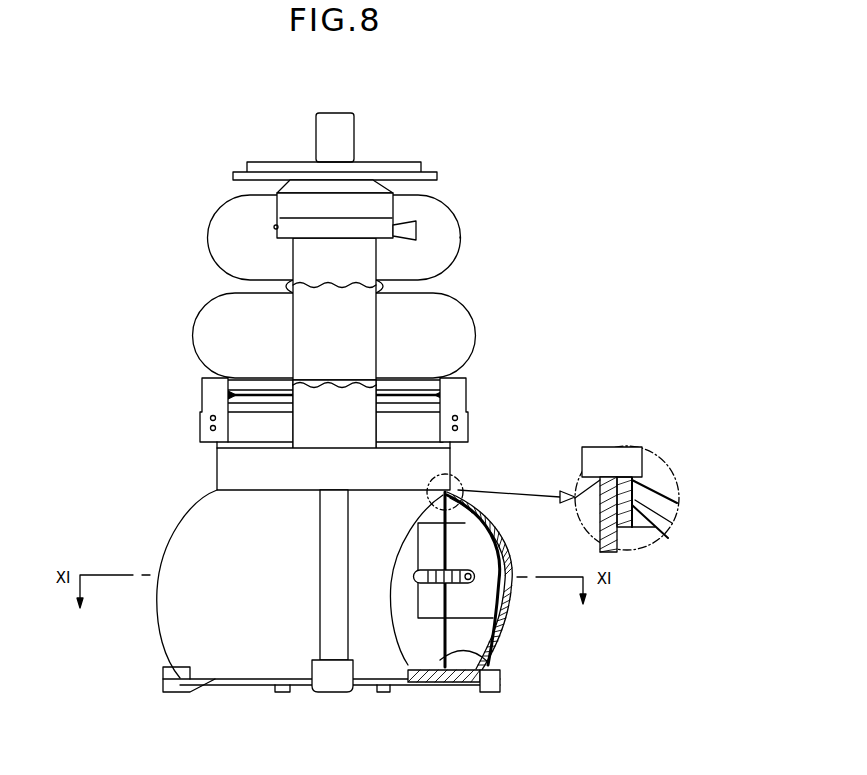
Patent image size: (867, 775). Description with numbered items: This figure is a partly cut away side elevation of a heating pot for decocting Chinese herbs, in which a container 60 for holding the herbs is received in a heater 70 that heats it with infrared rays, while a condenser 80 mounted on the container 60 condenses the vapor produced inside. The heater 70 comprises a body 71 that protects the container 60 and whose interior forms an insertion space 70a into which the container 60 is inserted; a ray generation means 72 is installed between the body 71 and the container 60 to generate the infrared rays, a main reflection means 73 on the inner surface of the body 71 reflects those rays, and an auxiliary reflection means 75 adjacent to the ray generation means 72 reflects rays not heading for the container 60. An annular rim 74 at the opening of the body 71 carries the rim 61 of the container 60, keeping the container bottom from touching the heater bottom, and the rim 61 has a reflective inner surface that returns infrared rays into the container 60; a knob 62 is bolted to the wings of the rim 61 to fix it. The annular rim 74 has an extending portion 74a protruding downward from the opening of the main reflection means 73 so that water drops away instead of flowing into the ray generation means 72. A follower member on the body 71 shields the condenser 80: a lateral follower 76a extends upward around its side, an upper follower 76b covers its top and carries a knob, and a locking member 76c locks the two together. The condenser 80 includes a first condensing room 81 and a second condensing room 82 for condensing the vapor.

The container 60 is at (497, 663).
The rim 61 is at (217, 443).
The knob 62 is at (213, 400).
The heater 70 is at (155, 556).
The insertion space 70a is at (458, 517).
The body 71 is at (508, 632).
The ray generation means 72 is at (455, 569).
The main reflection means 73 is at (450, 681).
The annular rim 74 is at (615, 453).
The extending portion 74a is at (650, 500).
The auxiliary reflection means 75 is at (485, 603).
The lateral follower 76a is at (350, 300).
The upper follower 76b is at (417, 167).
The locking member 76c is at (415, 228).
The condenser 80 is at (477, 325).
The first condensing room 81 is at (200, 320).
The second condensing room 82 is at (210, 233).